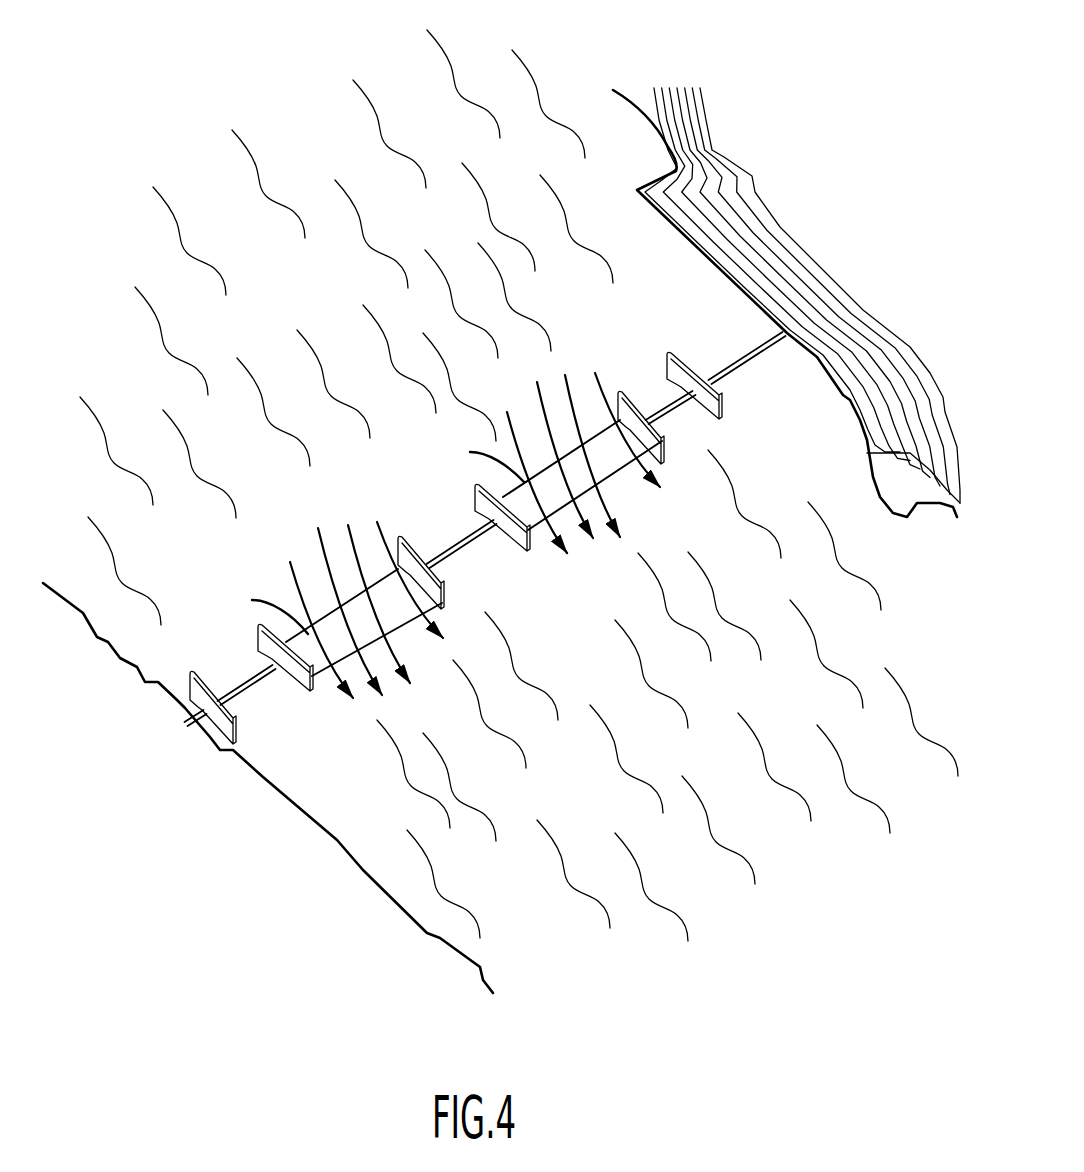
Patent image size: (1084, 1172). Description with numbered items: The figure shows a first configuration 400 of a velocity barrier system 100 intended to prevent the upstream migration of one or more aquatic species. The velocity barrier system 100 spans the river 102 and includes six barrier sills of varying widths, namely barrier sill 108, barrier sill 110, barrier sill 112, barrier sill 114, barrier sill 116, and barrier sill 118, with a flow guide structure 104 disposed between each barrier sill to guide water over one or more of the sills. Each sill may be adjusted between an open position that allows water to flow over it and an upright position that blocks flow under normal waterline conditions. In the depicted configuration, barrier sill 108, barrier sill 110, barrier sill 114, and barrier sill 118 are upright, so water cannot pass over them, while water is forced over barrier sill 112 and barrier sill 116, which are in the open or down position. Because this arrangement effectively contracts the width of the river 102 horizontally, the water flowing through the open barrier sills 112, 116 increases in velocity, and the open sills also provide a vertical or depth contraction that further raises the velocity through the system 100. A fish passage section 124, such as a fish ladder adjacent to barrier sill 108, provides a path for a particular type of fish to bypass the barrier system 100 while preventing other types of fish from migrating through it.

The first configuration 400 is at (125, 216).
The velocity barrier system 100 is at (533, 637).
The river 102 is at (895, 653).
The fish passage section 124 is at (830, 310).
The flow guide structure 104 is at (668, 350).
The barrier sill 108 is at (737, 356).
The barrier sill 110 is at (662, 406).
The barrier sill 112 is at (561, 458).
The barrier sill 114 is at (467, 543).
The barrier sill 116 is at (347, 606).
The barrier sill 118 is at (241, 691).